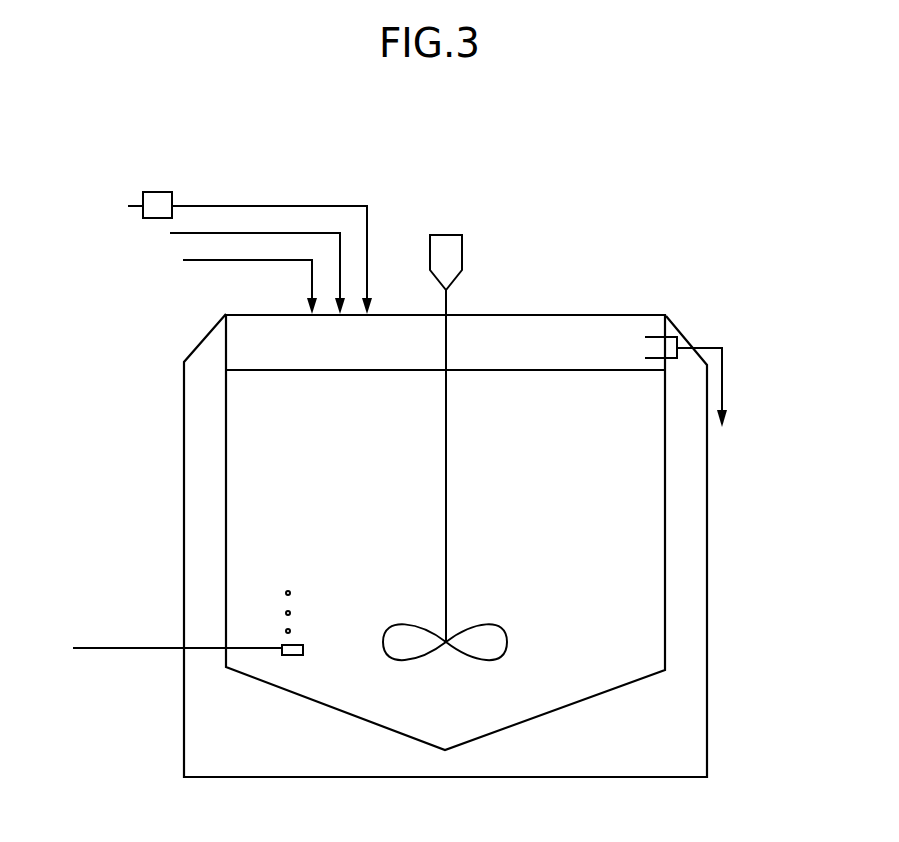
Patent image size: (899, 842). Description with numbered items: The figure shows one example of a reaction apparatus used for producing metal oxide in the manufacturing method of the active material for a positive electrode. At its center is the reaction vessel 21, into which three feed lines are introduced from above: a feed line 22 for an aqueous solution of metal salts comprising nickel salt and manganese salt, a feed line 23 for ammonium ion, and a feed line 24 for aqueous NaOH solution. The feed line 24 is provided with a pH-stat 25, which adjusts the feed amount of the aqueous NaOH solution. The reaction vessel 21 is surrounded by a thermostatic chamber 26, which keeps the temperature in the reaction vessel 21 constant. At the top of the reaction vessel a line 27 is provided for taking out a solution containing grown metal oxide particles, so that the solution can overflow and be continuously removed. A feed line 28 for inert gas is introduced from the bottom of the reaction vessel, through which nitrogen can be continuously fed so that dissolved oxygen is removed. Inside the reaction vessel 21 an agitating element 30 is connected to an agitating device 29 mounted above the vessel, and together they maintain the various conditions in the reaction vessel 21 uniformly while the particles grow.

The reaction vessel 21 is at (660, 650).
The feed line for aqueous solution of metal salts 22 is at (197, 262).
The feed line for ammonium ion 23 is at (227, 232).
The feed line for aqueous NaOH solution 24 is at (323, 205).
The pH-stat 25 is at (160, 190).
The thermostatic chamber 26 is at (207, 752).
The line for taking out solution 27 is at (725, 377).
The feed line for inert gas 28 is at (103, 647).
The agitating device 29 is at (463, 253).
The agitating element 30 is at (507, 640).